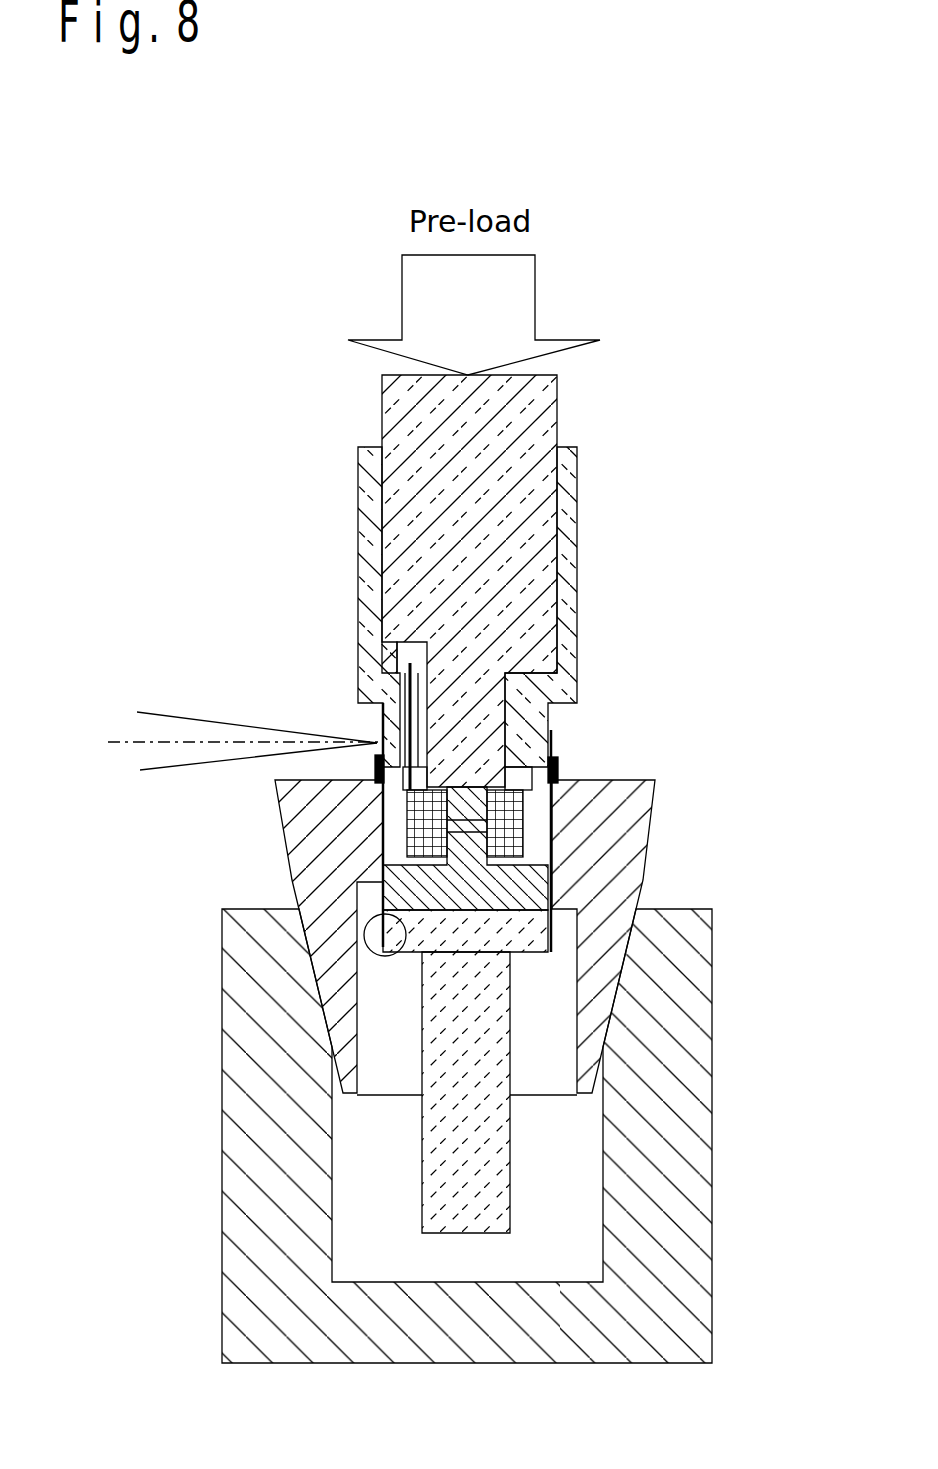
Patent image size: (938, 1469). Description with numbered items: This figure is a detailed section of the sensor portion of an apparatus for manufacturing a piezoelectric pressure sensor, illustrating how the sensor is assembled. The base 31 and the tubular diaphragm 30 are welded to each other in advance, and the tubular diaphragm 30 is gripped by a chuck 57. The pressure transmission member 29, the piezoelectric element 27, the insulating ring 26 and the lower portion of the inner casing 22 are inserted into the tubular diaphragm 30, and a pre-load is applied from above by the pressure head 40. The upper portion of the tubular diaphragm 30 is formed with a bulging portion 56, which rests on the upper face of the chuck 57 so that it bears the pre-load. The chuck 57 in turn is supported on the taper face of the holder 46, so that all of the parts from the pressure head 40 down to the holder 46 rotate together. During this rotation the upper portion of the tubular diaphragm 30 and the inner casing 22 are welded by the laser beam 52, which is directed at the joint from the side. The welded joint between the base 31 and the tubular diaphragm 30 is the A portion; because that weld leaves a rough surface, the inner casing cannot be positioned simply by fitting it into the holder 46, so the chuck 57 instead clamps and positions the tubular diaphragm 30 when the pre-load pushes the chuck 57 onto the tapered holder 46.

The pressure head 40 is at (540, 440).
The inner casing 22 is at (575, 545).
The laser beam 52 is at (207, 718).
The bulging portion 56 is at (552, 768).
The insulating ring 26 is at (557, 773).
The chuck 57 is at (627, 800).
The piezoelectric element 27 is at (523, 828).
The pressure transmission member 29 is at (522, 897).
The tubular diaphragm 30 is at (553, 916).
The holder 46 is at (677, 1027).
The base 31 is at (478, 1173).
The A portion A is at (385, 957).